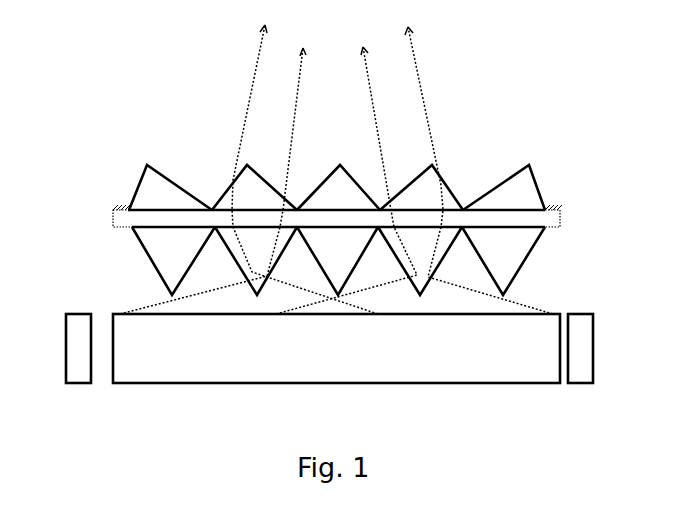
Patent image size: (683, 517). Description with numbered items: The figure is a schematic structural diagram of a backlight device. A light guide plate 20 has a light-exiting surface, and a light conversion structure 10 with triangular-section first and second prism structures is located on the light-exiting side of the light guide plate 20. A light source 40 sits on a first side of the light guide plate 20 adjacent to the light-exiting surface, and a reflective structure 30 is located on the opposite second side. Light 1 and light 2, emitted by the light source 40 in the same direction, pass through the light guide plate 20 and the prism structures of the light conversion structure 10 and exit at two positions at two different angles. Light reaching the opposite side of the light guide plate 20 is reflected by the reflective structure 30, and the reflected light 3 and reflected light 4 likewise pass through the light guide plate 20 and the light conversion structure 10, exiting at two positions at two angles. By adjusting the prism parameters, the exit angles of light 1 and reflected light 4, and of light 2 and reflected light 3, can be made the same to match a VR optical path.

The light 1 is at (217, 181).
The light 2 is at (479, 170).
The reflected light 3 is at (346, 180).
The reflected light 4 is at (305, 169).
The light conversion structure 10 is at (557, 210).
The light guide plate 20 is at (553, 315).
The reflective structure 30 is at (593, 338).
The light source 40 is at (67, 328).